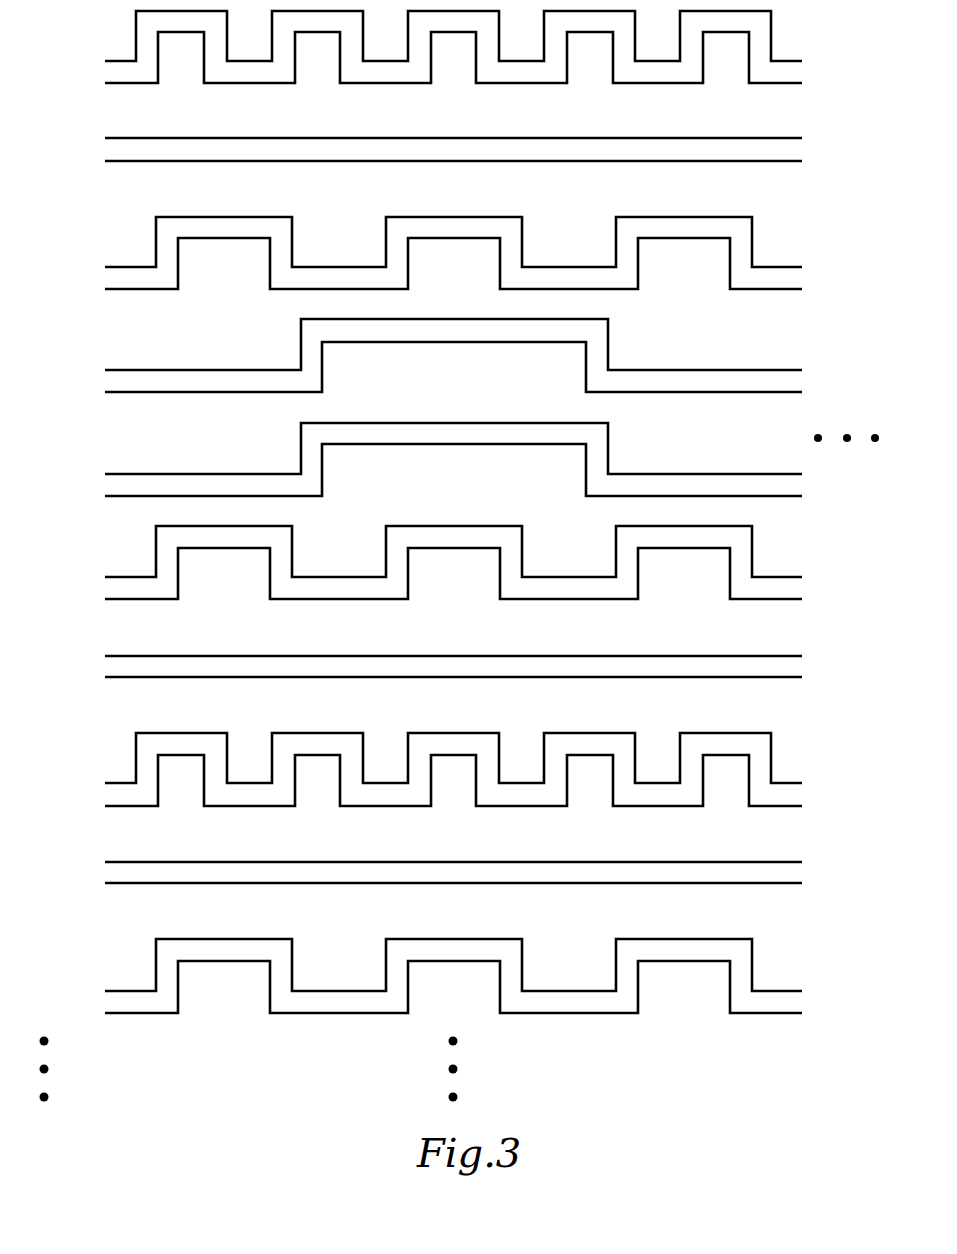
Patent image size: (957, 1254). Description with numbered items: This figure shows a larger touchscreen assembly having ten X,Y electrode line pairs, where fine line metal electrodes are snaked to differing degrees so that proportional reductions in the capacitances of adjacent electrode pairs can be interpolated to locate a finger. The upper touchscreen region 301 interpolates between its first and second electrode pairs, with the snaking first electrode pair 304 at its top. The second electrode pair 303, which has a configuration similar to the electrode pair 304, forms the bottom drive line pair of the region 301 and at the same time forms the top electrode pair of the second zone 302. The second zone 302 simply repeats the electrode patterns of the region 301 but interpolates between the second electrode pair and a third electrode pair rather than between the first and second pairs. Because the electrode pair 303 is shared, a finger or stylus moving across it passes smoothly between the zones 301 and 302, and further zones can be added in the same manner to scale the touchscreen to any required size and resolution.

The touchscreen region 301 is at (71, 11).
The second zone 302 is at (53, 731).
The X1, Y0 electrode pair 303 is at (799, 796).
The X0, Y0 electrode pair 304 is at (799, 72).